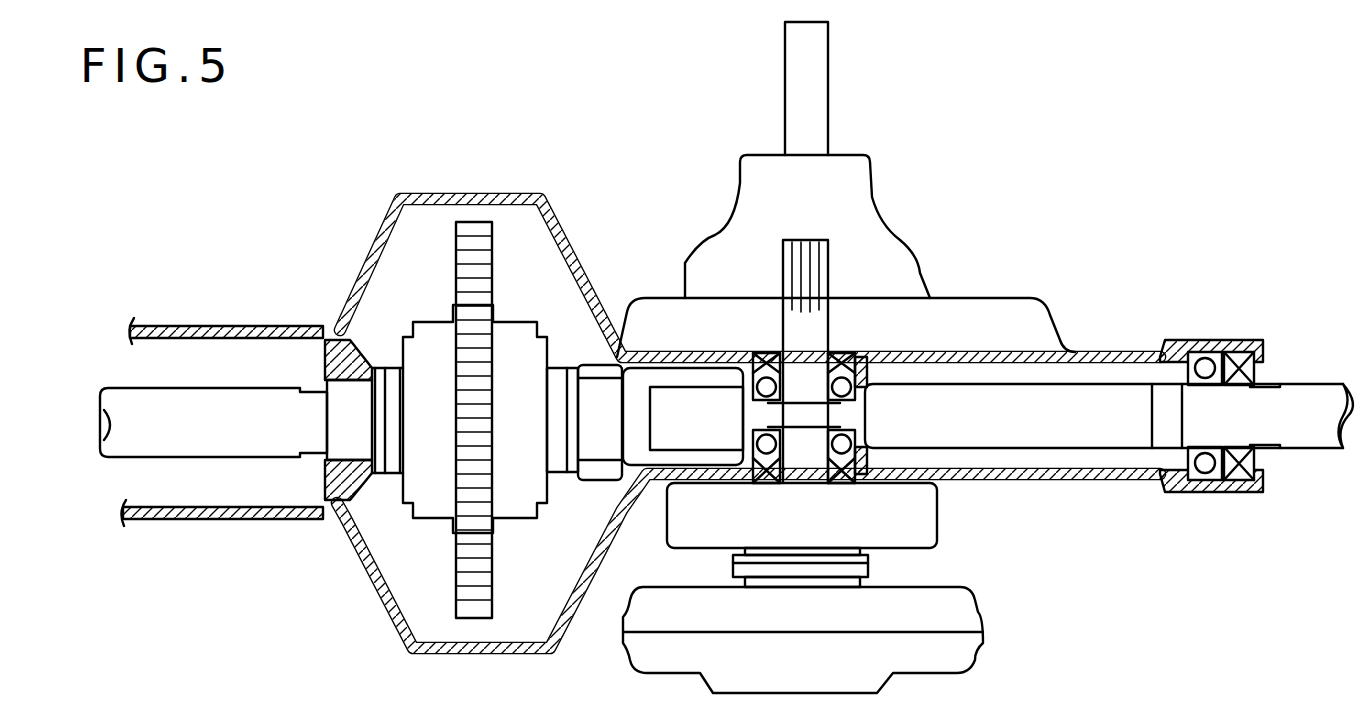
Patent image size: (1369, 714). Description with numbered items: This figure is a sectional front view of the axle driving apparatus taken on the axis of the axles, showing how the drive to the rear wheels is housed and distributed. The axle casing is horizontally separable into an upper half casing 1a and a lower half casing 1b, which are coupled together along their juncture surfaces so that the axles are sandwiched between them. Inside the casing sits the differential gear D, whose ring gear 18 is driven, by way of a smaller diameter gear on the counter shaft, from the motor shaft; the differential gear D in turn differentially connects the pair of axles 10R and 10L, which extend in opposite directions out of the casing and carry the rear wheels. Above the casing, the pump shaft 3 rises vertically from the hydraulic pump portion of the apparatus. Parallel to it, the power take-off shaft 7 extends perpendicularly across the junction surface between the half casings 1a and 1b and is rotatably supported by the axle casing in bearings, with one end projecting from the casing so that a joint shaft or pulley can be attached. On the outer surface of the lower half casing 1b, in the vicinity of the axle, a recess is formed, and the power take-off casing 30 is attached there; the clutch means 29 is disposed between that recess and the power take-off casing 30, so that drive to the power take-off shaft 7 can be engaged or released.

The half casing 1a is at (258, 325).
The half casing 1b is at (278, 519).
The axle 10R is at (230, 421).
The axle 10L is at (1070, 419).
The ring gear 18 is at (493, 253).
The differential gear D is at (439, 296).
The pump shaft 3 is at (818, 68).
The power take-off shaft 7 is at (805, 240).
The clutch means 29 is at (930, 513).
The power take-off casing 30 is at (967, 607).